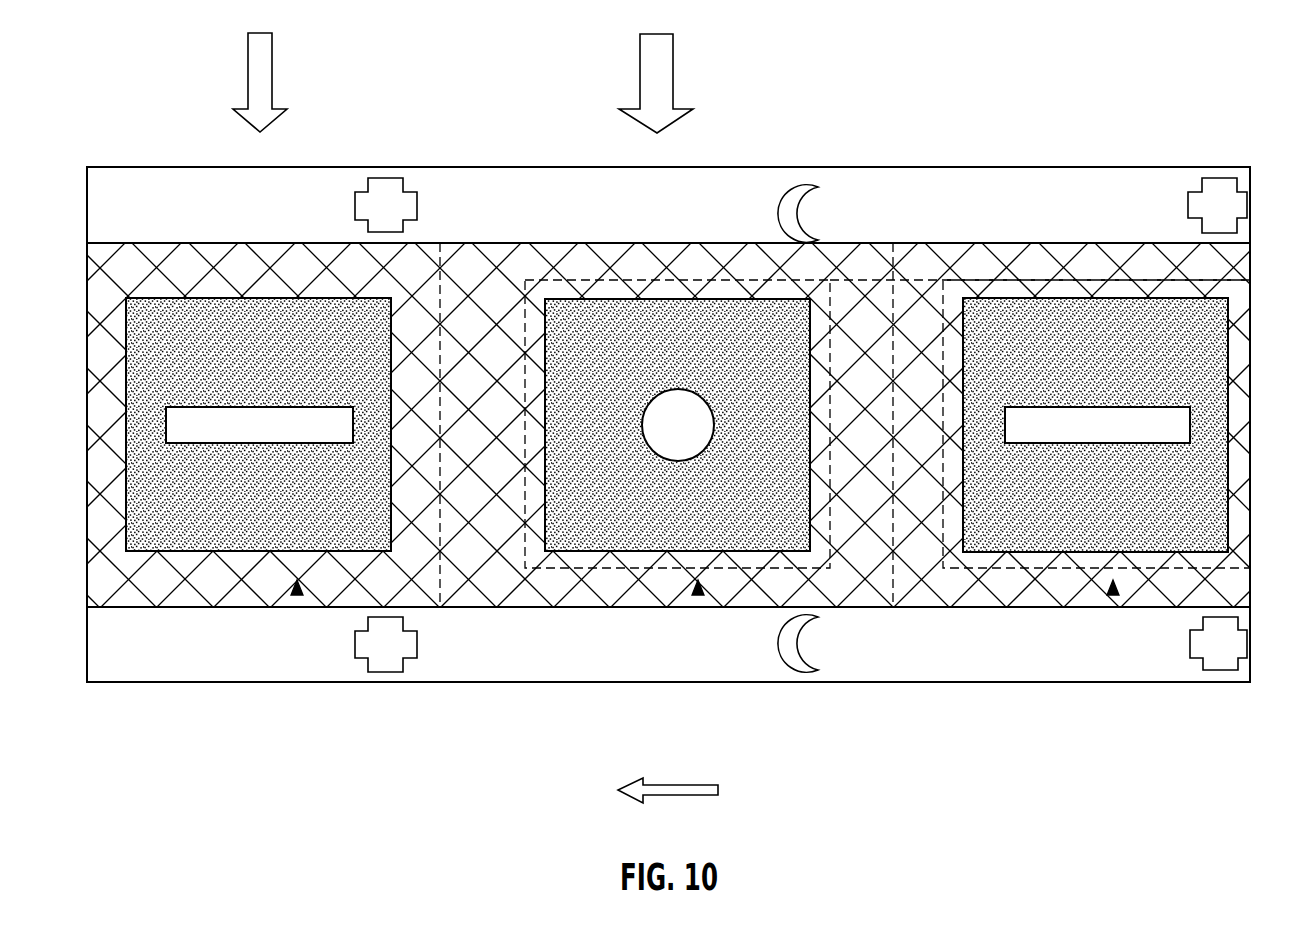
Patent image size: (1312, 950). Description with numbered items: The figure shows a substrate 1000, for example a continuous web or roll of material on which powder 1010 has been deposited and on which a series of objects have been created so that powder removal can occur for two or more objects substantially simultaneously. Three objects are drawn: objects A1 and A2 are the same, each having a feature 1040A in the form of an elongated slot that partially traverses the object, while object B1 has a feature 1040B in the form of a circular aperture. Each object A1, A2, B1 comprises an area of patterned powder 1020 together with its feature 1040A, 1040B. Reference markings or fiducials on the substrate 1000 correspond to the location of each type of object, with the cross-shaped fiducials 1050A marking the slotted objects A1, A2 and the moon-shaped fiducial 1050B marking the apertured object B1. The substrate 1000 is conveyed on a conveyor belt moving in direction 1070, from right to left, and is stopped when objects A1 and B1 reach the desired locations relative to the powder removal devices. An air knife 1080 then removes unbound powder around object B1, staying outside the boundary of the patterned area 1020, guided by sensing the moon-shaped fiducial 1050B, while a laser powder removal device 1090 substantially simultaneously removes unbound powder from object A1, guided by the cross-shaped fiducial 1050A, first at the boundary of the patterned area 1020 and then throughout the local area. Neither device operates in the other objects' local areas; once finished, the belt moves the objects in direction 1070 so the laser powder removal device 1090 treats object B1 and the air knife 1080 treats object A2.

The substrate 1000 is at (885, 658).
The powder 1010 is at (495, 573).
The patterned powder 1020 is at (212, 333).
The feature 1040A is at (265, 428).
The feature 1040B is at (680, 430).
The cross-shaped fiducial 1050A is at (387, 192).
The moon-shaped fiducial 1050B is at (805, 190).
The direction 1070 is at (718, 790).
The air knife 1080 is at (647, 52).
The laser powder removal device 1090 is at (252, 57).
The object A1 is at (297, 590).
The object A2 is at (1113, 590).
The object B1 is at (698, 590).